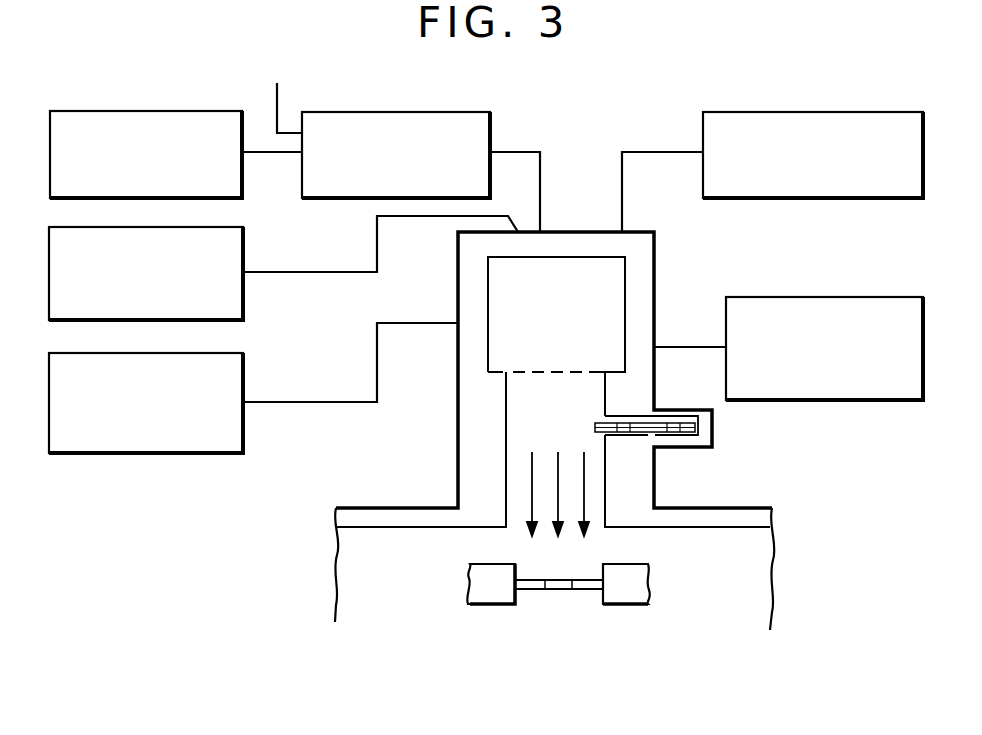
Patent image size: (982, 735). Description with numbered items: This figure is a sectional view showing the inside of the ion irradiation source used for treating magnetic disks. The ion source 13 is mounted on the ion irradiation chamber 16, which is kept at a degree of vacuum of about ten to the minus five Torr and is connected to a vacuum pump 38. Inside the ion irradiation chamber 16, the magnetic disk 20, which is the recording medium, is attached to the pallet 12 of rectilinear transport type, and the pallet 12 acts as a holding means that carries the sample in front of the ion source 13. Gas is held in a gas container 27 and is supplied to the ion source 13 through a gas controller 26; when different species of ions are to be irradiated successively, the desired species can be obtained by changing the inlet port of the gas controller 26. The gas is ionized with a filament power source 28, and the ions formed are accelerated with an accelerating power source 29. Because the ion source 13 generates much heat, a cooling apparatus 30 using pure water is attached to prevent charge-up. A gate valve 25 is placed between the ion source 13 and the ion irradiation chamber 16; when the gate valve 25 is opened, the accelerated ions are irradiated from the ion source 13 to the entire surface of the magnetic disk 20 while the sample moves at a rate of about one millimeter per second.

The pallet 12 is at (492, 598).
The ion source 13 is at (655, 288).
The ion irradiation chamber 16 is at (772, 580).
The magnetic disk 20 is at (537, 590).
The gate valve 25 is at (690, 440).
The gas controller 26 is at (397, 112).
The gas container 27 is at (137, 111).
The filament power source 28 is at (245, 298).
The accelerating power source 29 is at (187, 453).
The cooling apparatus 30 is at (804, 112).
The vacuum pump 38 is at (819, 297).